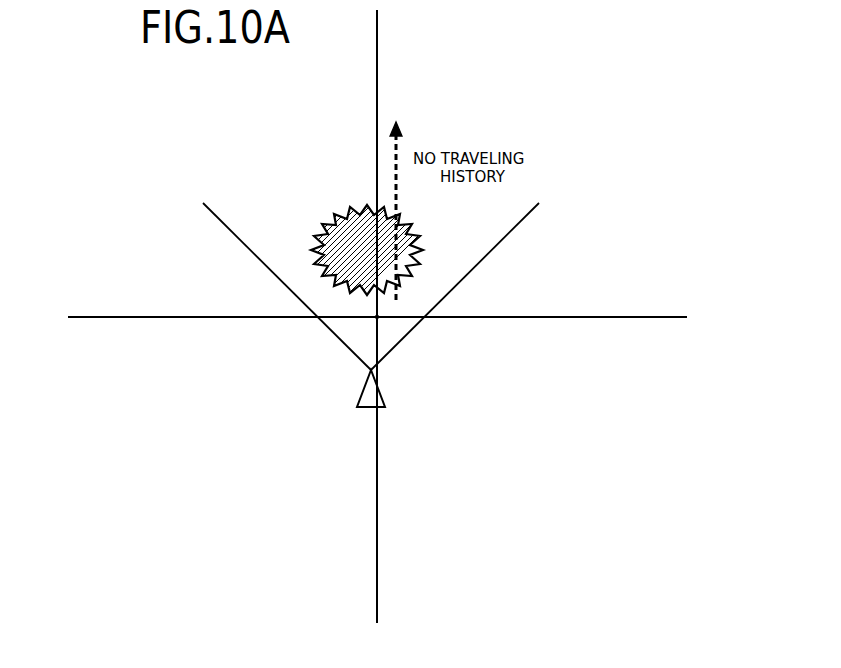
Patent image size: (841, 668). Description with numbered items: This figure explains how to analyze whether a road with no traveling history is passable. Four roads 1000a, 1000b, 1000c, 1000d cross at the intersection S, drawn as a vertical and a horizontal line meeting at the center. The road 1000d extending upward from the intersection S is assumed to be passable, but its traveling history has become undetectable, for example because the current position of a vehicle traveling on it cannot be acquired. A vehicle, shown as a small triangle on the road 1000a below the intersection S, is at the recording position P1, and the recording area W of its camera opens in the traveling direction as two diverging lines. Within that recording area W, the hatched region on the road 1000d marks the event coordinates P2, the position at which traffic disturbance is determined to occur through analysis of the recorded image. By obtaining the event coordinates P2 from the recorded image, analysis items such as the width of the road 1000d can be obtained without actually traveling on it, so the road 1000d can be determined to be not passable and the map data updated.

The road 1000a is at (377, 515).
The road 1000b is at (563, 317).
The road 1000c is at (190, 317).
The road 1000d is at (377, 52).
The recording area W is at (505, 237).
The intersection S is at (376, 318).
The recording position P1 is at (380, 397).
The event coordinates P2 is at (346, 218).